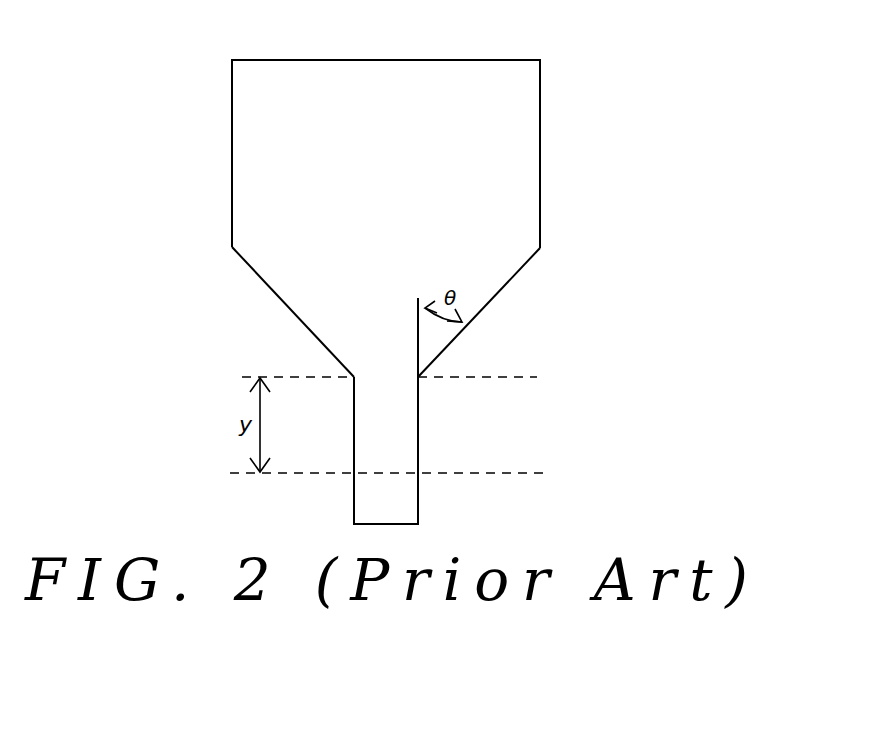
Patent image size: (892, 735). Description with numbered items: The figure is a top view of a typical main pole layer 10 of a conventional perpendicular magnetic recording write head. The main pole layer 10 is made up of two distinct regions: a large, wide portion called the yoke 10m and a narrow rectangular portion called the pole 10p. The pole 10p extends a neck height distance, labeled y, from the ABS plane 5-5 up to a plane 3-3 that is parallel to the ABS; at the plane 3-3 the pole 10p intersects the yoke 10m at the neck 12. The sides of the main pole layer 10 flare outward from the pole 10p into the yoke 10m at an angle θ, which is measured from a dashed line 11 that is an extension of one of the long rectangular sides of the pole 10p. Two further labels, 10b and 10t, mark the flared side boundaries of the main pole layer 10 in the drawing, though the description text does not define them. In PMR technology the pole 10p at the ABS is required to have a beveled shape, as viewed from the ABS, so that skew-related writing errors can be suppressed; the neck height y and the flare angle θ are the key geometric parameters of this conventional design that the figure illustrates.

The main pole layer 10 is at (382, 274).
The yoke 10m is at (490, 112).
The boundary wall 10b is at (282, 283).
The tapered portion 10t is at (289, 311).
The pole 10p is at (384, 435).
The dashed line 11 is at (420, 325).
The neck 12 is at (420, 376).
The plane 3- 3 is at (386, 379).
The ABS plane 5 is at (387, 476).